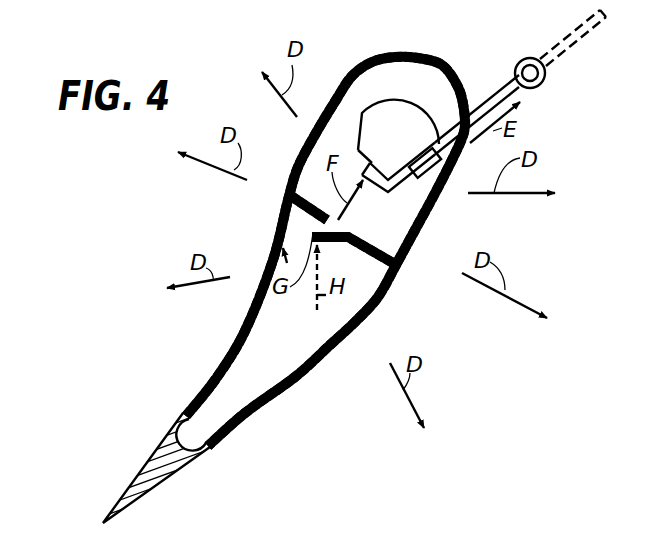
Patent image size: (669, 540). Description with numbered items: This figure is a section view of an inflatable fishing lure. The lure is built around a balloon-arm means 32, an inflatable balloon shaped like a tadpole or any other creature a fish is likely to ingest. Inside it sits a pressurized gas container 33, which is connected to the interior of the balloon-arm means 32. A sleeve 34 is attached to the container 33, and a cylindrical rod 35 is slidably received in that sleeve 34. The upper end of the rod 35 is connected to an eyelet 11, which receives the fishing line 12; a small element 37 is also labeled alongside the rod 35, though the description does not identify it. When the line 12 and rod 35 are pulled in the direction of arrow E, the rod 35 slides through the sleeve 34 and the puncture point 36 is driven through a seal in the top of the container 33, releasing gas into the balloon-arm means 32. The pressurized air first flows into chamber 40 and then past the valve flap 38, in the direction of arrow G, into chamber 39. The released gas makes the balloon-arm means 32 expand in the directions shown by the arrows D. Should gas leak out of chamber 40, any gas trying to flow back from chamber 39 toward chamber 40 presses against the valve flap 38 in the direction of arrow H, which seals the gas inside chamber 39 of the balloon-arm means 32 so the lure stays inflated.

The eyelet 11 is at (547, 82).
The fishing line 12 is at (577, 47).
The balloon-arm means 32 is at (266, 222).
The pressurized gas container 33 is at (422, 105).
The sleeve 34 is at (404, 190).
The rod 35 is at (489, 100).
The puncture point 36 is at (366, 168).
The block 37 is at (449, 160).
The valve flap 38 is at (327, 242).
The chamber 39 is at (264, 374).
The chamber 40 is at (394, 187).